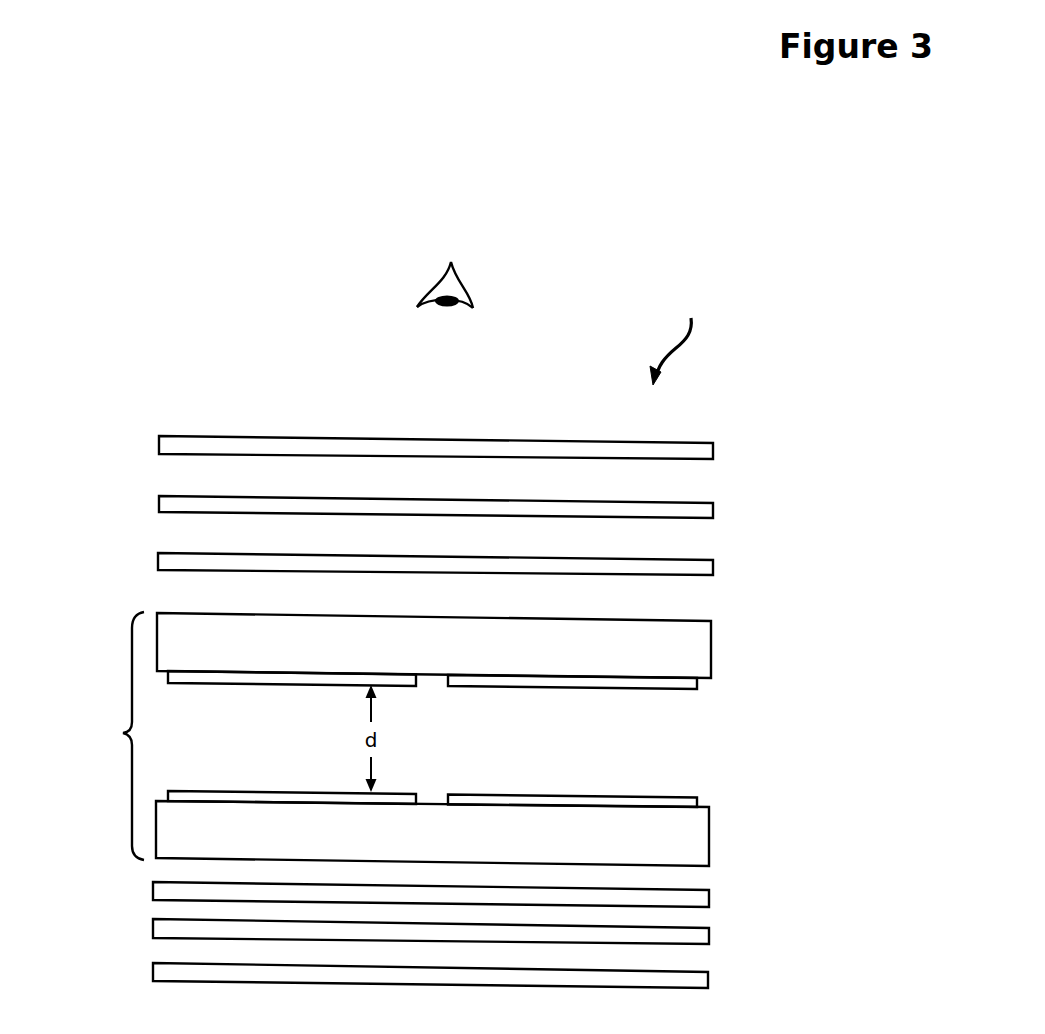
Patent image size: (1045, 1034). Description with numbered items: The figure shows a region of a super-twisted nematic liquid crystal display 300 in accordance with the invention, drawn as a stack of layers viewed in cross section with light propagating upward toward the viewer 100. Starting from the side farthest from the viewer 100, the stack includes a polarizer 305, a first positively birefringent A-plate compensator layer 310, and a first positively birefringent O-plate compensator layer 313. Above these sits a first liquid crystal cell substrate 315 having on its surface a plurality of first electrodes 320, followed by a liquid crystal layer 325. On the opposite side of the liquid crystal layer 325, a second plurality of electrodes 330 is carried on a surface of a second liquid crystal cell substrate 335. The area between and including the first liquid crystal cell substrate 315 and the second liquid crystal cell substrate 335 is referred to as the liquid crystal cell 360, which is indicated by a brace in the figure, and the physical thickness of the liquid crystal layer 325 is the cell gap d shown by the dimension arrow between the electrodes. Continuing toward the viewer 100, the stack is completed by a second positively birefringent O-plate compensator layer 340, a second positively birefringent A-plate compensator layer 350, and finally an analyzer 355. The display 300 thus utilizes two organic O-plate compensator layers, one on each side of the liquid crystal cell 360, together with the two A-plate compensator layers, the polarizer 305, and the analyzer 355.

The viewer 100 is at (445, 271).
The super-twisted nematic liquid crystal display 300 is at (681, 339).
The polarizer 305 is at (710, 980).
The first positively birefringent A-plate compensator layer 310 is at (711, 938).
The first positively birefringent O-plate compensator layer 313 is at (711, 900).
The first liquid crystal cell substrate 315 is at (711, 851).
The first electrodes 320 is at (699, 801).
The liquid crystal layer 325 is at (696, 741).
The second plurality of electrodes 330 is at (699, 685).
The second liquid crystal cell substrate 335 is at (713, 636).
The second positively birefringent O-plate compensator layer 340 is at (714, 566).
The second positively birefringent A-plate compensator layer 350 is at (714, 509).
The analyzer 355 is at (714, 445).
The liquid crystal cell 360 is at (122, 733).